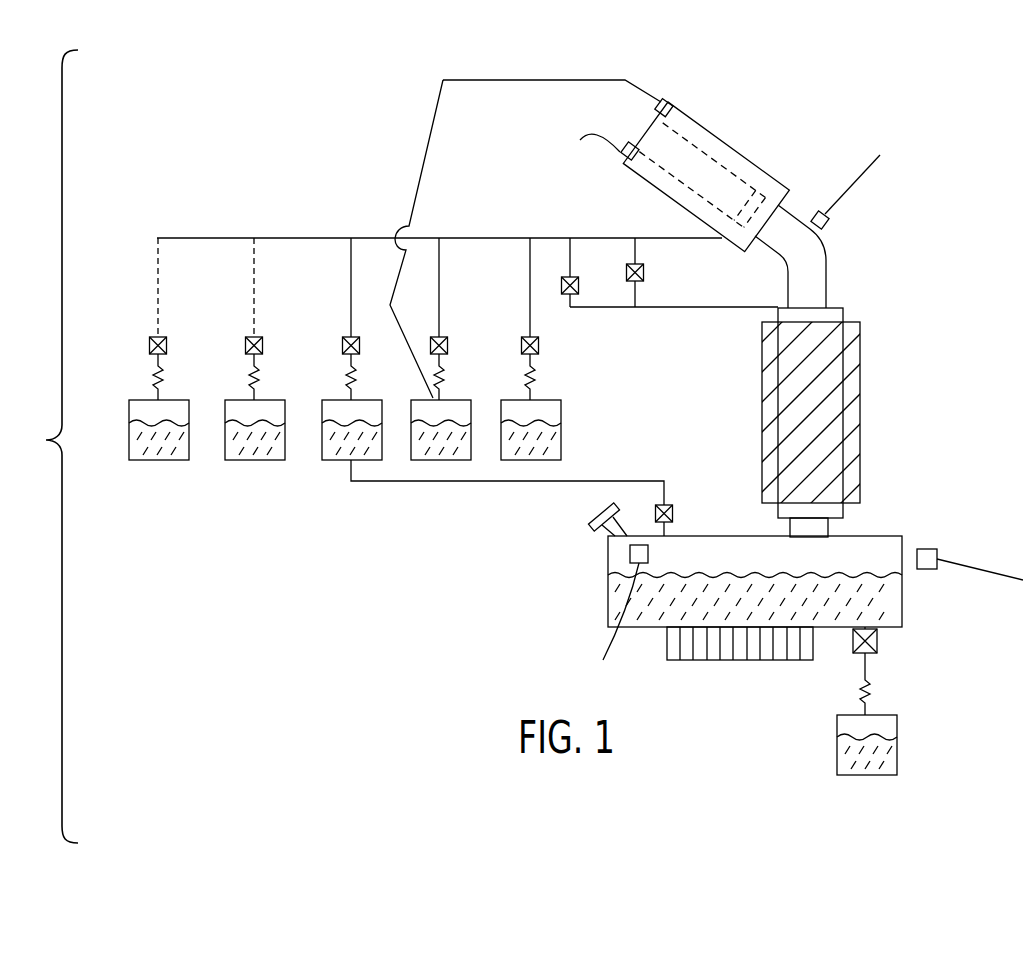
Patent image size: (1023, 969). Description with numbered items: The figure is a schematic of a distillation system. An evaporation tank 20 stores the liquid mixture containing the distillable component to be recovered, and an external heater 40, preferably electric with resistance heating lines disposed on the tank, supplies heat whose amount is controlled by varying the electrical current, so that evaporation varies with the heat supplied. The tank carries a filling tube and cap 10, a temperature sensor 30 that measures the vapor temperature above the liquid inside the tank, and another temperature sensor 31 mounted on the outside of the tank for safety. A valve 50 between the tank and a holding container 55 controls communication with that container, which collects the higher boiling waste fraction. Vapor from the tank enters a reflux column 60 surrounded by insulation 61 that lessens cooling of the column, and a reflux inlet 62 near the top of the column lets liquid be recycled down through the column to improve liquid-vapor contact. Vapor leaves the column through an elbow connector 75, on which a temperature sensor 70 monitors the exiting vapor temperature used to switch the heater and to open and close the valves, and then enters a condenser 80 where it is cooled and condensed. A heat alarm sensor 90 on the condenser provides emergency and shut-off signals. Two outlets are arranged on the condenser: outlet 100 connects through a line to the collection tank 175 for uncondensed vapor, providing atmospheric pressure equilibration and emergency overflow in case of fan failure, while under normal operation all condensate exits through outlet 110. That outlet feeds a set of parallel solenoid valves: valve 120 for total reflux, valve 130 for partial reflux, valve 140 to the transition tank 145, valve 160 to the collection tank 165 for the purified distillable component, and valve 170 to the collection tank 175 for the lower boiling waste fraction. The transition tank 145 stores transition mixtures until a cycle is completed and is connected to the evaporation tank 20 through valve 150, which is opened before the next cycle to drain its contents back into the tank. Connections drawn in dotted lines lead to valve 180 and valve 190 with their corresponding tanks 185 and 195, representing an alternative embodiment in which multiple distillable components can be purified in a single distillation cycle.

The filling tube and cap 10 is at (592, 529).
The evaporation tank 20 is at (608, 607).
The temperature sensor 30 is at (630, 557).
The temperature sensor 31 is at (927, 548).
The external heater 40 is at (740, 662).
The valve 50 is at (878, 638).
The holding container 55 is at (867, 777).
The reflux column 60 is at (845, 415).
The insulation 61 is at (861, 372).
The reflux inlet 62 is at (775, 307).
The temperature sensor 70 is at (822, 212).
The elbow connector 75 is at (828, 270).
The condenser 80 is at (723, 136).
The heat alarm sensor 90 is at (619, 154).
The outlet 100 is at (665, 96).
The outlet 110 is at (723, 248).
The valve 120 is at (629, 283).
The valve 130 is at (563, 297).
The valve 140 is at (342, 347).
The transition tank 145 is at (338, 462).
The valve 150 is at (673, 510).
The valve 160 is at (521, 347).
The collection tank 165 is at (531, 462).
The valve 170 is at (430, 347).
The collection tank 175 is at (442, 462).
The valve 180 is at (245, 347).
The tank 185 is at (256, 462).
The valve 190 is at (148, 347).
The tank 195 is at (160, 462).